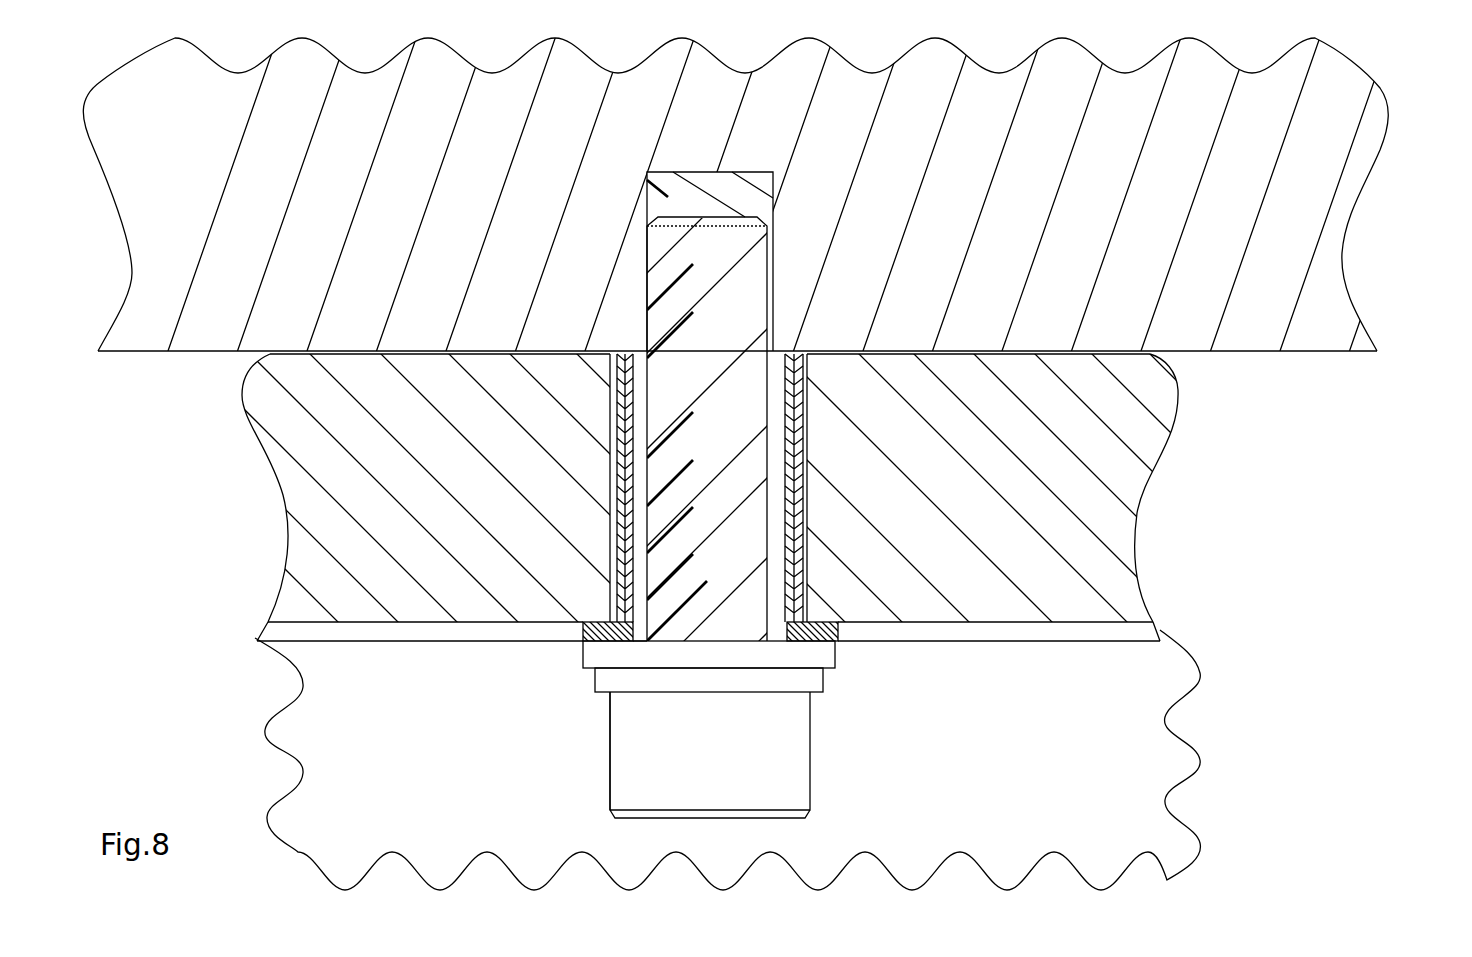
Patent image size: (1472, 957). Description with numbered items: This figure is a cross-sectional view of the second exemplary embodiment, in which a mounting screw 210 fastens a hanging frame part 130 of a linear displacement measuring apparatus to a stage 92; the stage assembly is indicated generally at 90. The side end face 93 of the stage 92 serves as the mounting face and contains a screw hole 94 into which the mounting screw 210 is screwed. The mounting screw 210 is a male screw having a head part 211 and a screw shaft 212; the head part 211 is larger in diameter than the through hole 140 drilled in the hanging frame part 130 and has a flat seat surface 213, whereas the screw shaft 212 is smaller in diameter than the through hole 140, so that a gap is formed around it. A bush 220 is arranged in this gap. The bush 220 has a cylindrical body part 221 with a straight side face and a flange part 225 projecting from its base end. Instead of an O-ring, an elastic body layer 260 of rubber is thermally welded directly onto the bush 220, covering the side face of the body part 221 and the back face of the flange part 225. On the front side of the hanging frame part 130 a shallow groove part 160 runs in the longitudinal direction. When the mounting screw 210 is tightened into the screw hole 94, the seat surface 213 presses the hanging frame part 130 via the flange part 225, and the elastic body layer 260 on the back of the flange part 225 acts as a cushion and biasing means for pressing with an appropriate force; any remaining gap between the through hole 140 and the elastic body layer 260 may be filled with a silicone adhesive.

The first component (upper plate) 90 is at (1408, 388).
The stage 92 is at (1338, 345).
The side end face 93 is at (1250, 353).
The screw hole 94 is at (773, 203).
The hanging frame part 130 is at (307, 522).
The through hole 140 is at (807, 435).
The groove part 160 is at (1093, 622).
The mounting screw 210 is at (800, 777).
The head part 211 is at (615, 775).
The screw shaft 212 is at (760, 280).
The seat surface 213 is at (645, 645).
The bush 220 is at (806, 410).
The body part 221 is at (608, 430).
The flange part 225 is at (585, 620).
The elastic body layer 260 is at (608, 468).